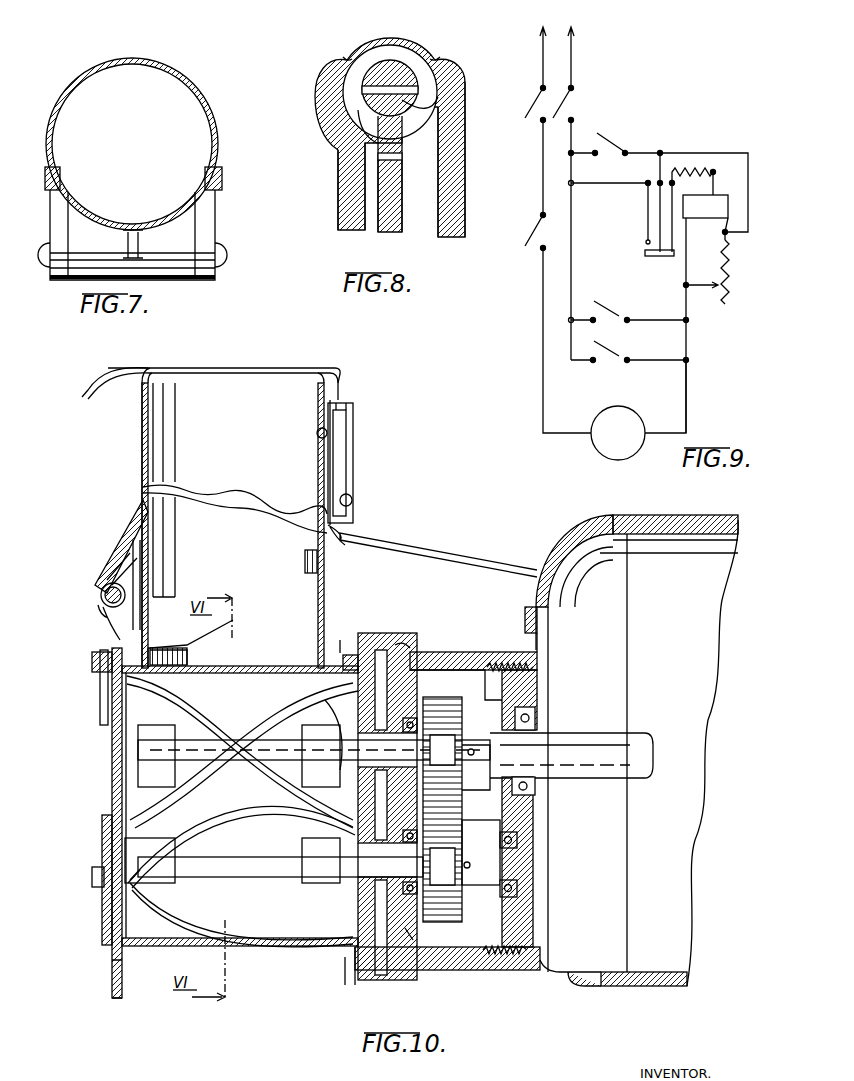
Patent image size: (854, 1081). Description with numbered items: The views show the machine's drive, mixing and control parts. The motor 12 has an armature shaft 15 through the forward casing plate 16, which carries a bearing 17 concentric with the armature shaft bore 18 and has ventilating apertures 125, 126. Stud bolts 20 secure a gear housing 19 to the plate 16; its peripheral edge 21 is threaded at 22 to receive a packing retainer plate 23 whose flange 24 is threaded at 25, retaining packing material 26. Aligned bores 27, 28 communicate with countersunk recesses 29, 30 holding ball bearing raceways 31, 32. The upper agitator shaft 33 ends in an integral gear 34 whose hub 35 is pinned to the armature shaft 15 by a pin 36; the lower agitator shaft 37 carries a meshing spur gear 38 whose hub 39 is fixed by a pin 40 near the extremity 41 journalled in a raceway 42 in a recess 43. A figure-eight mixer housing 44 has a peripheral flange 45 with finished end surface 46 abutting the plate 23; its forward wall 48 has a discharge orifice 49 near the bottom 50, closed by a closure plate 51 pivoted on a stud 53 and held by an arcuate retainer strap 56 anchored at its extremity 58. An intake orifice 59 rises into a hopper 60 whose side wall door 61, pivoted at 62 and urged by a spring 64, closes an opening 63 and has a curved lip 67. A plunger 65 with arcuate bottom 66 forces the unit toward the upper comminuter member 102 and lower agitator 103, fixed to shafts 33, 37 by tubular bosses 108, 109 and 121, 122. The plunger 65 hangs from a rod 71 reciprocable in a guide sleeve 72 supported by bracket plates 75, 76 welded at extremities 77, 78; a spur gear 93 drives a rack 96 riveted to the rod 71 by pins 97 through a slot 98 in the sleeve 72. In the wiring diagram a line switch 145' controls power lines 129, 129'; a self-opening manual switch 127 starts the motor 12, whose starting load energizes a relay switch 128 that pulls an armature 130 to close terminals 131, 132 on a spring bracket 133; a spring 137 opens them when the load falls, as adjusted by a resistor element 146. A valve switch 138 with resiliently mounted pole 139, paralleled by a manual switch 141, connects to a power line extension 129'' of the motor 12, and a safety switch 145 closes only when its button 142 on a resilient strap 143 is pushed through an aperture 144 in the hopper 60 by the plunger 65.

In FIG. 9, the electric motor 12 is at (633, 440).
In FIG. 10, the electric motor 12 is at (683, 891).
In FIG. 10, the armature shaft 15 is at (629, 744).
In FIG. 10, the forward motor casing plate 16 is at (532, 652).
In FIG. 10, the bearing 17 is at (537, 720).
In FIG. 10, the armature shaft bore 18 is at (540, 697).
In FIG. 10, the gear housing 19 is at (483, 650).
In FIG. 10, the stud bolts 20 is at (533, 667).
In FIG. 10, the forward peripheral edge 21 is at (420, 667).
In FIG. 10, the threads 22 is at (413, 653).
In FIG. 10, the packing retainer plate 23 is at (352, 657).
In FIG. 10, the peripheral flange 24 is at (383, 633).
In FIG. 10, the inward threads 25 is at (390, 652).
In FIG. 10, the packing material 26 is at (350, 957).
In FIG. 10, the upper bore 27 is at (422, 723).
In FIG. 10, the lower bore 28 is at (430, 900).
In FIG. 10, the countersunk recess 29 is at (420, 705).
In FIG. 10, the countersunk recess 30 is at (423, 830).
In FIG. 10, the ball bearing raceway 31 is at (428, 700).
In FIG. 10, the ball bearing raceway 32 is at (413, 940).
In FIG. 10, the agitator shaft 33 is at (273, 743).
In FIG. 10, the integral gear 34 is at (443, 707).
In FIG. 10, the enlarged hub 35 is at (488, 730).
In FIG. 10, the pin 36 is at (474, 752).
In FIG. 10, the agitator shaft 37 is at (247, 860).
In FIG. 10, the spur gear 38 is at (437, 920).
In FIG. 10, the enlarged hub 39 is at (517, 833).
In FIG. 10, the pin 40 is at (470, 865).
In FIG. 10, the agitator shaft extremity 41 is at (510, 865).
In FIG. 10, the ball bearing raceway 42 is at (513, 887).
In FIG. 10, the recess 43 is at (507, 893).
In FIG. 10, the mixer housing 44 is at (267, 900).
In FIG. 10, the peripheral flange 45 is at (350, 973).
In FIG. 10, the finished end surface 46 is at (353, 935).
In FIG. 10, the forward wall 48 is at (112, 793).
In FIG. 10, the discharge orifice 49 is at (112, 913).
In FIG. 10, the bottom 50 is at (148, 933).
In FIG. 10, the closure plate 51 is at (102, 850).
In FIG. 10, the stud 53 is at (95, 878).
In FIG. 10, the arcuate retainer strap 56 is at (100, 710).
In FIG. 10, the strap extremity 58 is at (95, 654).
In FIG. 10, the intake orifice 59 is at (340, 640).
In FIG. 7, the hopper 60 is at (197, 82).
In FIG. 10, the hopper 60 is at (250, 367).
In FIG. 7, the side wall door 61 is at (127, 220).
In FIG. 10, the side wall door 61 is at (140, 456).
In FIG. 7, the door pivot 62 is at (222, 255).
In FIG. 10, the door pivot 62 is at (100, 595).
In FIG. 7, the hopper opening 63 is at (48, 170).
In FIG. 10, the spring 64 is at (105, 570).
In FIG. 10, the plunger 65 is at (318, 565).
In FIG. 10, the arcuate bottom 66 is at (253, 688).
In FIG. 10, the curved lip 67 is at (83, 384).
In FIG. 8, the rod 71 is at (397, 72).
In FIG. 8, the guide sleeve 72 is at (415, 62).
In FIG. 8, the bracket plate 75 is at (340, 186).
In FIG. 8, the bracket plate 76 is at (455, 183).
In FIG. 8, the bracket plate extremity 77 is at (437, 58).
In FIG. 8, the bracket plate extremity 78 is at (346, 58).
In FIG. 8, the spur gear 93 is at (390, 222).
In FIG. 8, the vertical rack 96 is at (400, 147).
In FIG. 8, the rivet pins 97 is at (383, 70).
In FIG. 8, the vertical slot 98 is at (365, 132).
In FIG. 10, the upper comminuter member 102 is at (135, 767).
In FIG. 10, the lower agitator 103 is at (221, 912).
In FIG. 10, the tubular boss 108 is at (323, 860).
In FIG. 10, the tubular boss 109 is at (132, 883).
In FIG. 10, the tubular boss 121 is at (327, 737).
In FIG. 10, the tubular boss 122 is at (152, 745).
In FIG. 10, the ventilating aperture 125 is at (525, 630).
In FIG. 10, the ventilating aperture 126 is at (601, 968).
In FIG. 9, the manual switch 127 is at (622, 142).
In FIG. 9, the relay switch 128 is at (715, 199).
In FIG. 9, the power line 129 is at (593, 193).
In FIG. 9, the main wire line 129' is at (523, 57).
In FIG. 9, the power line extension 129'' is at (695, 396).
In FIG. 9, the armature 130 is at (672, 230).
In FIG. 9, the terminal 131 is at (657, 257).
In FIG. 9, the terminal 132 is at (646, 241).
In FIG. 9, the spring bracket 133 is at (660, 210).
In FIG. 9, the spring 137 is at (682, 170).
In FIG. 9, the valve switch 138 is at (616, 311).
In FIG. 9, the resiliently mounted pole 139 is at (587, 318).
In FIG. 9, the manual switch 141 is at (620, 352).
In FIG. 10, the switch button 142 is at (316, 433).
In FIG. 9, the resilient strap 143 is at (532, 235).
In FIG. 10, the resilient strap 143 is at (328, 470).
In FIG. 10, the aperture 144 is at (322, 420).
In FIG. 9, the safety switch 145 is at (535, 338).
In FIG. 10, the safety switch 145 is at (357, 394).
In FIG. 9, the line switch 145' is at (578, 103).
In FIG. 9, the adjustable resistor element 146 is at (731, 268).